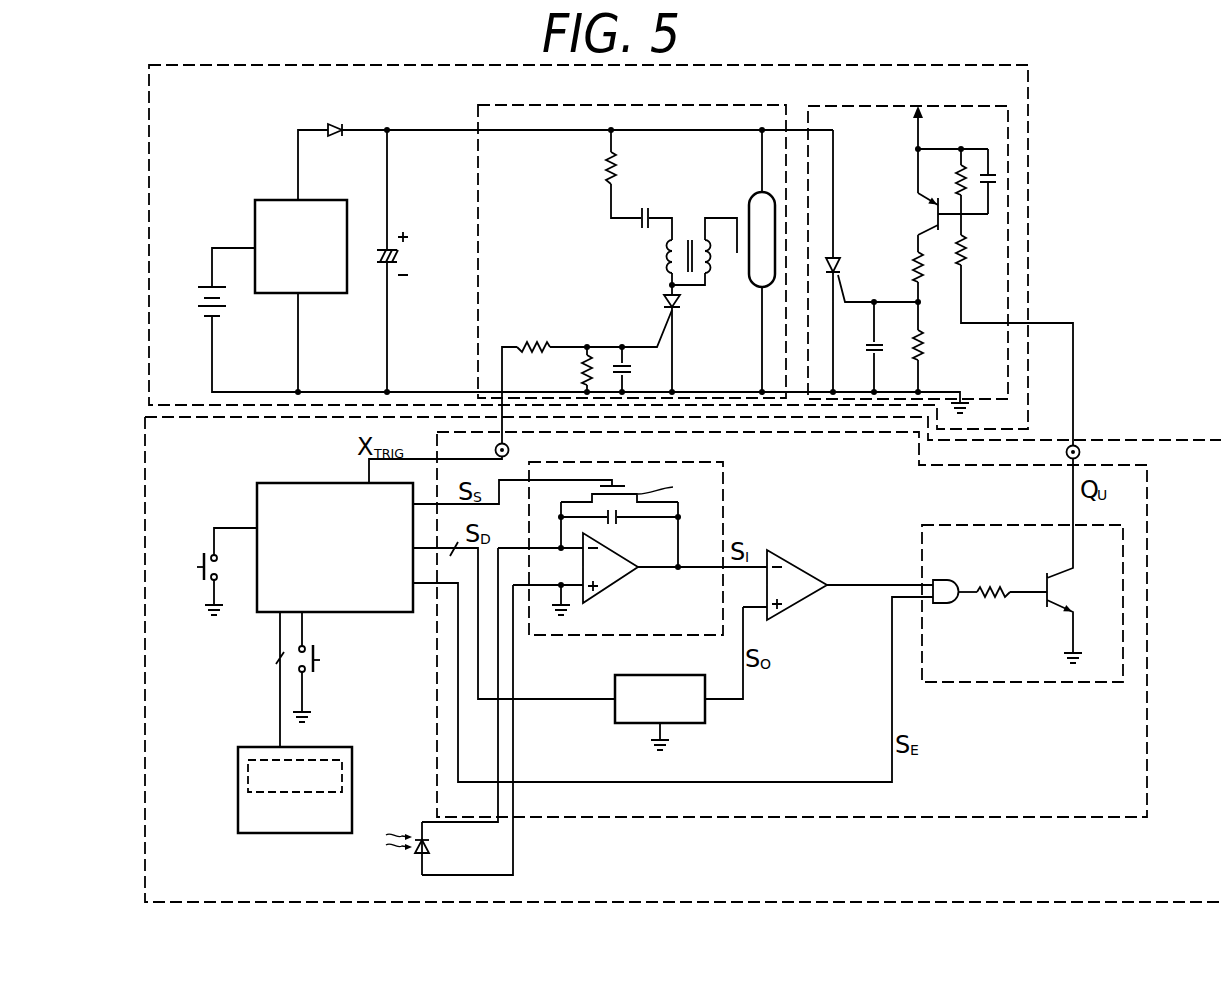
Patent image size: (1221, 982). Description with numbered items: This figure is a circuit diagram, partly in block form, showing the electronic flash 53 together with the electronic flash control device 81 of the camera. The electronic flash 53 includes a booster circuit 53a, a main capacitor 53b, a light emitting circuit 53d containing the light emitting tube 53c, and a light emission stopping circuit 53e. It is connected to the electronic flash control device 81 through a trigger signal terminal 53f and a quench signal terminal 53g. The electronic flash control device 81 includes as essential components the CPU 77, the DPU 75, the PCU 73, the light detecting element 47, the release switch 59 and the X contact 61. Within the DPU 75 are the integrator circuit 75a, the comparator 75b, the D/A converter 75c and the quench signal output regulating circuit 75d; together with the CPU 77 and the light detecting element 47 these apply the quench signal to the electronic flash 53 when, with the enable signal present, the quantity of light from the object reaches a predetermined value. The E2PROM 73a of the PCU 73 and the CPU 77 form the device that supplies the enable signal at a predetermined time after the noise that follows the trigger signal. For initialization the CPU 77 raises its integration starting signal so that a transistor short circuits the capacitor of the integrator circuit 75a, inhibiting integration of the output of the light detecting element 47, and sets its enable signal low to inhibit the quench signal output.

The electronic flash 53 is at (1041, 149).
The booster circuit 53a is at (329, 199).
The main capacitor 53b is at (405, 259).
The light emitting tube 53c is at (749, 203).
The light emitting circuit 53d is at (579, 103).
The light emission stopping circuit 53e is at (890, 104).
The trigger signal terminal 53f is at (509, 450).
The quench signal terminal 53g is at (1080, 451).
The electronic flash control device 81 is at (1201, 434).
The CPU 77 is at (300, 482).
The X contact 61 is at (197, 567).
The release switch 59 is at (320, 661).
The PCU 73 is at (352, 757).
The E2PROM 73a is at (342, 779).
The light detecting element 47 is at (431, 845).
The DPU 75 is at (1155, 629).
The integrator circuit 75a is at (727, 489).
The comparator 75b is at (786, 561).
The D/A converter 75c is at (660, 679).
The quench signal output regulating circuit 75d is at (1038, 686).